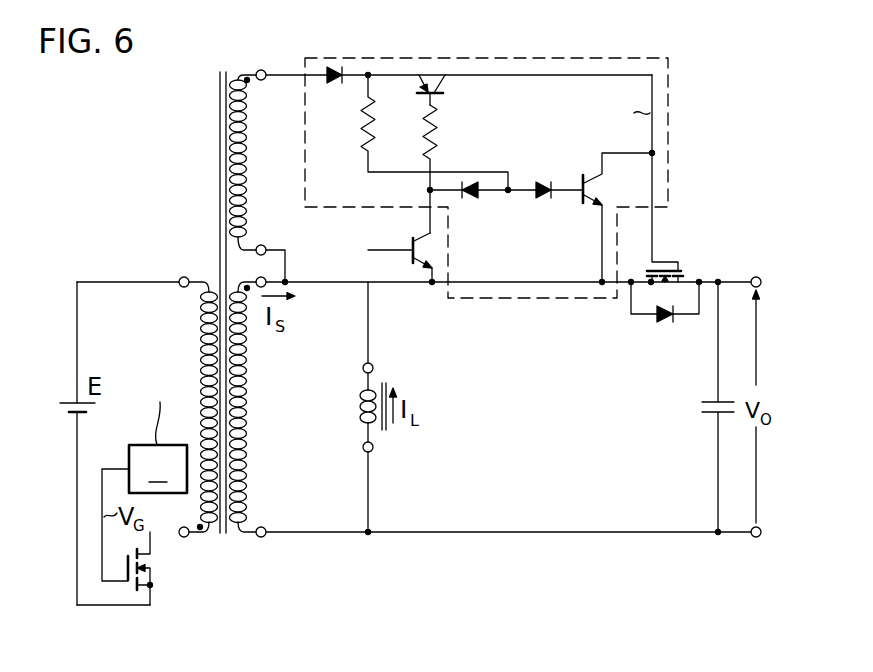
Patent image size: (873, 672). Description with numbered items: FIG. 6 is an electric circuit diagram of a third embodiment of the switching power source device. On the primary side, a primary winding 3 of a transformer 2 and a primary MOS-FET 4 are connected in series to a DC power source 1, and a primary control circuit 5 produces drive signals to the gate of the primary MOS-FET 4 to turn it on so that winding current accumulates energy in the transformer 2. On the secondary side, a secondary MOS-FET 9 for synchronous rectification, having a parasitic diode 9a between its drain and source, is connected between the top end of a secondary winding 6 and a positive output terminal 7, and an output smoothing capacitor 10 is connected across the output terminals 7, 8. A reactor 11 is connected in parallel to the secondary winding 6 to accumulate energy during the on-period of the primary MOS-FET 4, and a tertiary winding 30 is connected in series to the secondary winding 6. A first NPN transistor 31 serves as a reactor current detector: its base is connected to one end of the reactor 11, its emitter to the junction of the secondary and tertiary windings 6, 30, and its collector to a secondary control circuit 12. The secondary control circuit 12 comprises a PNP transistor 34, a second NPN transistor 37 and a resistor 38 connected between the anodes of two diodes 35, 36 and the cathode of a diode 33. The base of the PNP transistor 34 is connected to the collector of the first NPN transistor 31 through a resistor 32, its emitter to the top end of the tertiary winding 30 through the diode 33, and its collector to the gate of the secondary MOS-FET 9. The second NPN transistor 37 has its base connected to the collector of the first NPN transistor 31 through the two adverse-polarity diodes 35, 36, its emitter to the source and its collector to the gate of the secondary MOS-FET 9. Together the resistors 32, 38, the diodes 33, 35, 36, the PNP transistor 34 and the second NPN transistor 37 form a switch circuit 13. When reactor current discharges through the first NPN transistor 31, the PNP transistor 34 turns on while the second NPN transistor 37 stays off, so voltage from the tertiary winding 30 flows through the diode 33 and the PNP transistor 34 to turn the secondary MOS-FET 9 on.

The DC power source 1 is at (71, 401).
The transformer 2 is at (215, 335).
The primary winding 3 is at (203, 325).
The primary MOS-FET 4 is at (150, 571).
The primary control circuit 5 is at (148, 457).
The secondary winding 6 is at (249, 447).
The positive output terminal 7 is at (756, 276).
The output terminal 8 is at (756, 539).
The secondary MOS-FET 9 is at (681, 262).
The parasitic diode 9a is at (668, 323).
The output smoothing capacitor 10 is at (705, 410).
The reactor 11 is at (360, 409).
The secondary control circuit 12 is at (203, 160).
The switch circuit 13 is at (533, 305).
The tertiary winding 30 is at (249, 161).
The first NPN transistor 31 is at (409, 243).
The resistor 32 is at (437, 140).
The diode 33 is at (335, 84).
The PNP transistor 34 is at (437, 86).
The diode 35 is at (546, 199).
The diode 36 is at (470, 199).
The second NPN transistor 37 is at (582, 180).
The resistor 38 is at (371, 127).